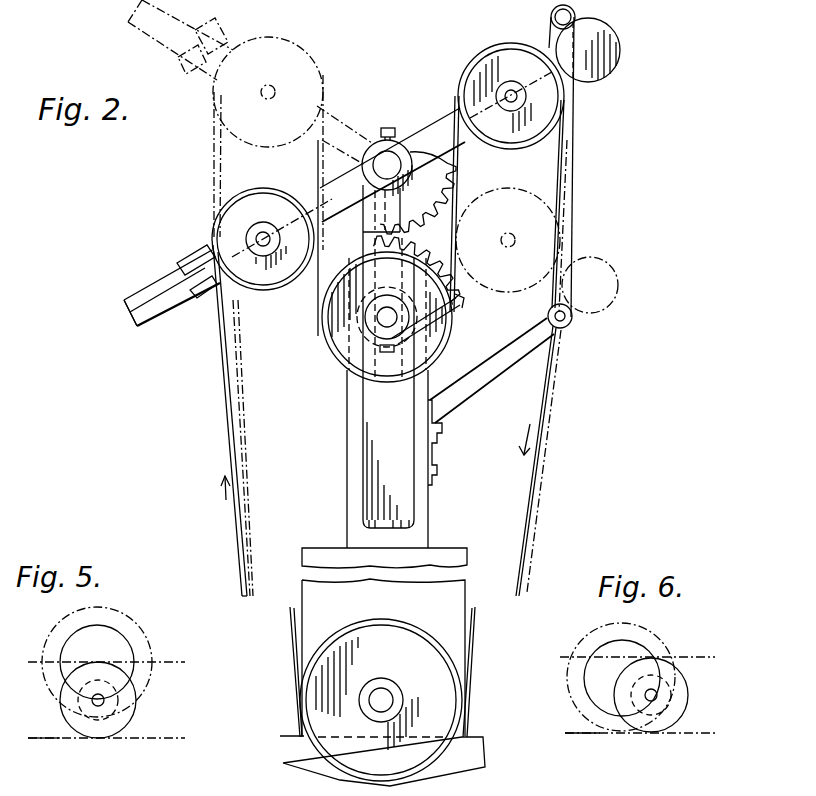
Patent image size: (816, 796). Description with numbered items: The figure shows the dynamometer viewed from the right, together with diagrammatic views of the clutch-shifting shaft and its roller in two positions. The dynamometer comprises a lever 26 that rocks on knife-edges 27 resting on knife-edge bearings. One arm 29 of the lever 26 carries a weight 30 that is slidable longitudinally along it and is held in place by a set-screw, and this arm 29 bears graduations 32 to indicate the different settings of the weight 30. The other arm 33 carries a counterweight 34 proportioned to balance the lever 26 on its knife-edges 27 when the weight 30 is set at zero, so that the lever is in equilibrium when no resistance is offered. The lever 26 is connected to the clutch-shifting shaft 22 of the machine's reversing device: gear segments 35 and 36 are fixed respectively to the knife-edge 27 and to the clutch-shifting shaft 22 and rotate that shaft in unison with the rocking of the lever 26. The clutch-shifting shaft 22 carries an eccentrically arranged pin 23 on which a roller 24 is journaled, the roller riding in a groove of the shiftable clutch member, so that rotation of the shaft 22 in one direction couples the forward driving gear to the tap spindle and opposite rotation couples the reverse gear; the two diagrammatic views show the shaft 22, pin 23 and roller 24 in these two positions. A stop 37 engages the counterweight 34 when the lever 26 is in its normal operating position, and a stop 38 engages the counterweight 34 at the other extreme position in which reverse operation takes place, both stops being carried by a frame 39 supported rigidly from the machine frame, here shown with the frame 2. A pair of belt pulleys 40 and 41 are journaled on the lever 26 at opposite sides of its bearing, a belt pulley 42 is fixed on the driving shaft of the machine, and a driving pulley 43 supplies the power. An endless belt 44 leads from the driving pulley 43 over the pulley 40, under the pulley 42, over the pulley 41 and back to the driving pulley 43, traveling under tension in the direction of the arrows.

In FIG. 2, the frame 2 is at (424, 534).
In FIG. 5, the clutch-shifting shaft 22 is at (112, 643).
In FIG. 6, the clutch-shifting shaft 22 is at (633, 650).
In FIG. 5, the eccentrically arranged pin 23 is at (104, 699).
In FIG. 6, the eccentrically arranged pin 23 is at (658, 693).
In FIG. 5, the roller 24 is at (128, 726).
In FIG. 6, the roller 24 is at (688, 708).
In FIG. 2, the lever 26 is at (419, 134).
In FIG. 2, the knife-edges 27 is at (381, 158).
In FIG. 2, the arm 29 is at (137, 322).
In FIG. 2, the weight 30 is at (187, 262).
In FIG. 2, the graduations 32 is at (161, 291).
In FIG. 2, the arm 33 is at (575, 103).
In FIG. 2, the counterweight 34 is at (620, 55).
In FIG. 2, the gear segment 35 is at (418, 193).
In FIG. 2, the gear segment 36 is at (419, 290).
In FIG. 2, the stop 37 is at (578, 22).
In FIG. 2, the stop 38 is at (574, 318).
In FIG. 2, the frame 39 is at (574, 195).
In FIG. 2, the belt pulley 40 is at (266, 277).
In FIG. 2, the belt pulley 41 is at (492, 47).
In FIG. 2, the belt pulley 42 is at (340, 330).
In FIG. 2, the driving pulley 43 is at (381, 700).
In FIG. 2, the endless belt 44 is at (234, 519).